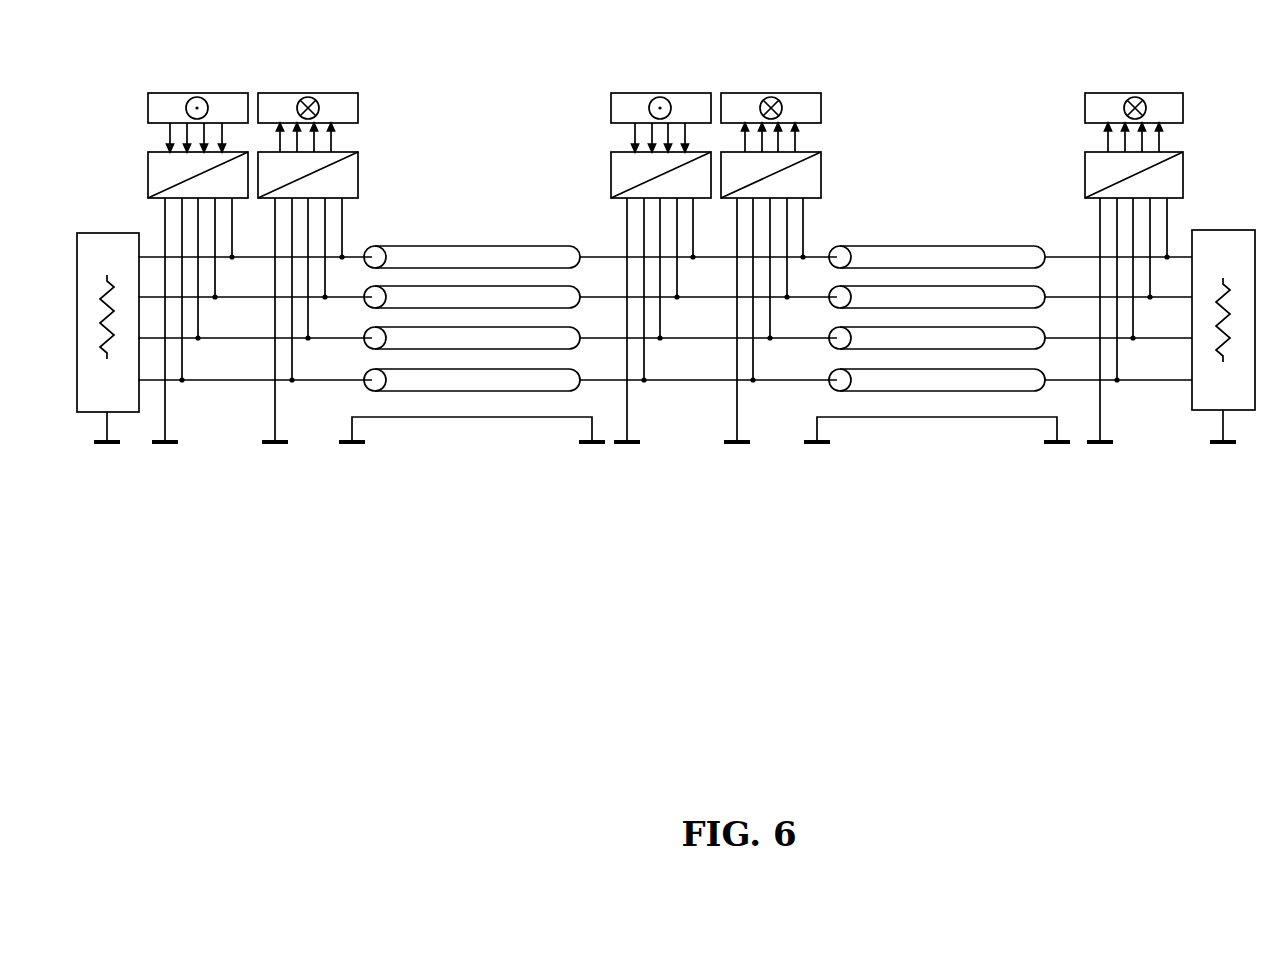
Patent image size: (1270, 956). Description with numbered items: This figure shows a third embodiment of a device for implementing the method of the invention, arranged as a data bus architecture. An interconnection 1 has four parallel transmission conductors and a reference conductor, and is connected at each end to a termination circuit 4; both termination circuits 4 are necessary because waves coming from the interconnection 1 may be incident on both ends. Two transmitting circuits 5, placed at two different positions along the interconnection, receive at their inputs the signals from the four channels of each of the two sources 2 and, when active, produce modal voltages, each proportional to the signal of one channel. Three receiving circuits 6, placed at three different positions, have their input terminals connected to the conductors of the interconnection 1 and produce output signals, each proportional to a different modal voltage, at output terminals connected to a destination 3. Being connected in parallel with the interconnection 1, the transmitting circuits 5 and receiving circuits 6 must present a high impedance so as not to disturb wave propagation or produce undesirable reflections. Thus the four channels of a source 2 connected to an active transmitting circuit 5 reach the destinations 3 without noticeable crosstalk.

The interconnection 1 is at (450, 237).
The source 2 is at (188, 88).
The destination 3 is at (297, 88).
The termination circuit 4 is at (94, 230).
The transmitting circuit 5 is at (146, 181).
The receiving circuit 6 is at (365, 180).